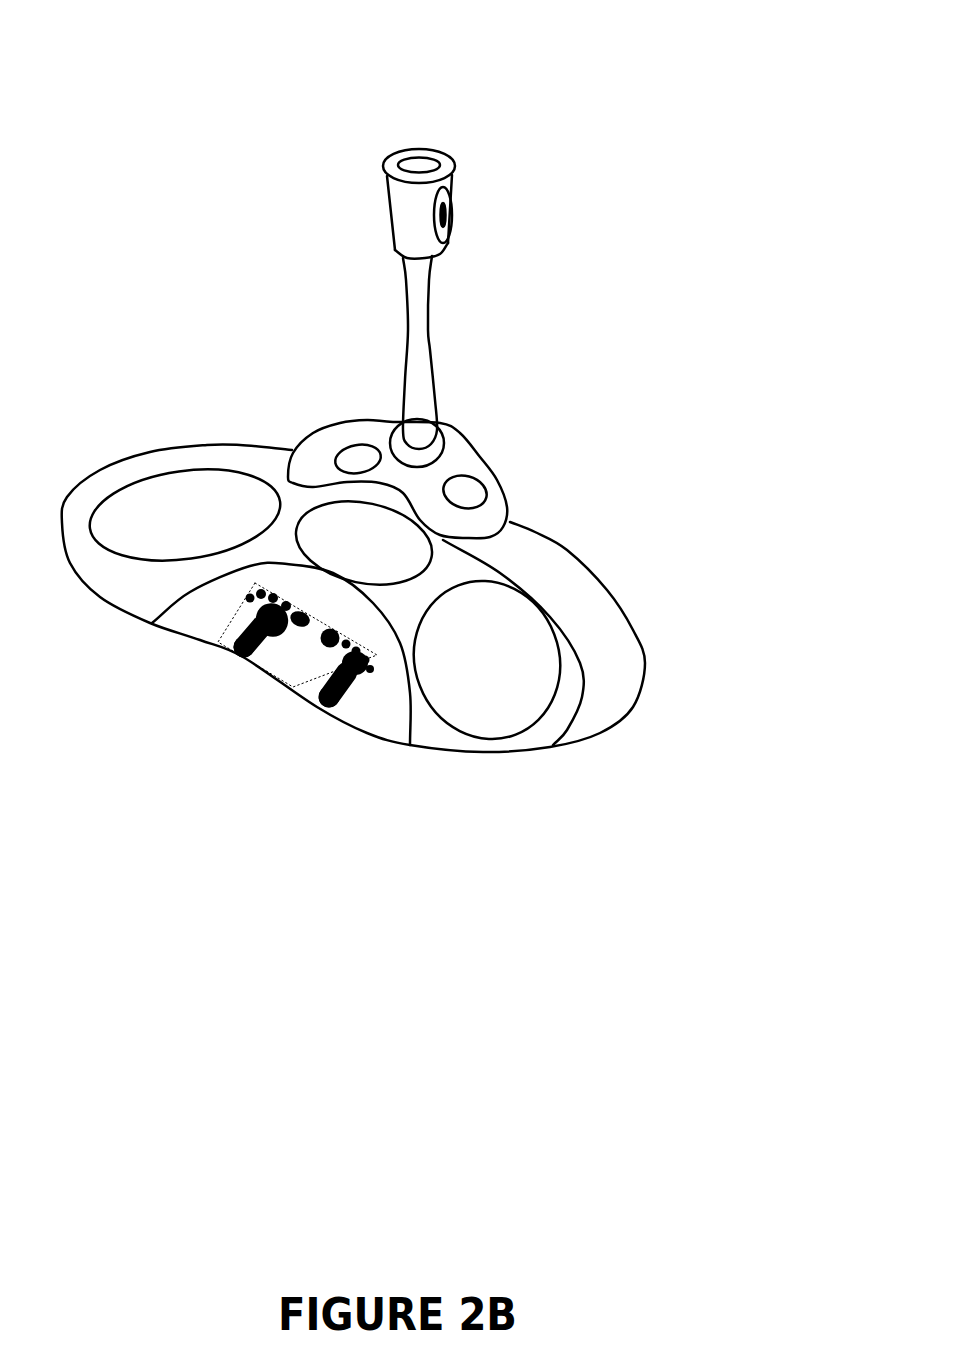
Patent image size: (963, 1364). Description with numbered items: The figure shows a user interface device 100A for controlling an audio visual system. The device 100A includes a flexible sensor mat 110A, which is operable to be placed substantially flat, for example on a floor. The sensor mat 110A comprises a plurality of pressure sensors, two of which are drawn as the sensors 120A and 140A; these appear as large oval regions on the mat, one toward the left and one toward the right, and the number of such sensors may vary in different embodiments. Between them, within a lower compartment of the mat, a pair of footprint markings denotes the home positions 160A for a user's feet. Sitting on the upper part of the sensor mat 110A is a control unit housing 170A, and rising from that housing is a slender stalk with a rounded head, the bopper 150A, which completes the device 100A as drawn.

The user interface device 100A is at (80, 22).
The flexible sensor mat 110A is at (645, 664).
The pressure sensor 120A is at (207, 524).
The pressure sensor 140A is at (514, 661).
The bopper 150A is at (433, 308).
The home positions 160A is at (323, 707).
The control unit housing 170A is at (498, 461).